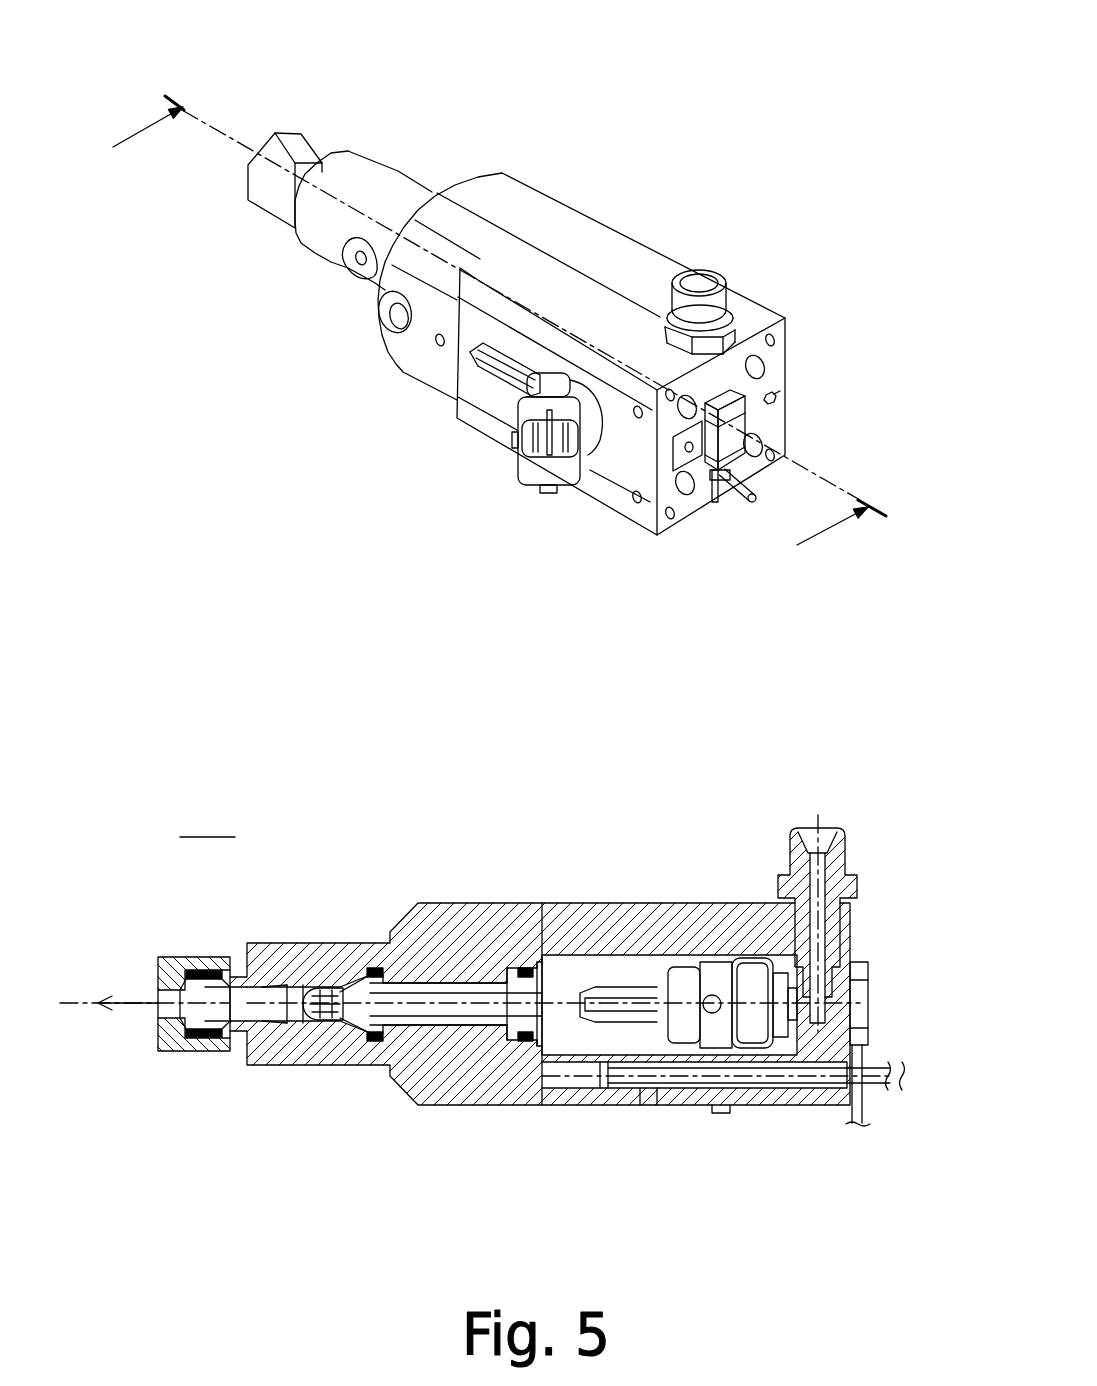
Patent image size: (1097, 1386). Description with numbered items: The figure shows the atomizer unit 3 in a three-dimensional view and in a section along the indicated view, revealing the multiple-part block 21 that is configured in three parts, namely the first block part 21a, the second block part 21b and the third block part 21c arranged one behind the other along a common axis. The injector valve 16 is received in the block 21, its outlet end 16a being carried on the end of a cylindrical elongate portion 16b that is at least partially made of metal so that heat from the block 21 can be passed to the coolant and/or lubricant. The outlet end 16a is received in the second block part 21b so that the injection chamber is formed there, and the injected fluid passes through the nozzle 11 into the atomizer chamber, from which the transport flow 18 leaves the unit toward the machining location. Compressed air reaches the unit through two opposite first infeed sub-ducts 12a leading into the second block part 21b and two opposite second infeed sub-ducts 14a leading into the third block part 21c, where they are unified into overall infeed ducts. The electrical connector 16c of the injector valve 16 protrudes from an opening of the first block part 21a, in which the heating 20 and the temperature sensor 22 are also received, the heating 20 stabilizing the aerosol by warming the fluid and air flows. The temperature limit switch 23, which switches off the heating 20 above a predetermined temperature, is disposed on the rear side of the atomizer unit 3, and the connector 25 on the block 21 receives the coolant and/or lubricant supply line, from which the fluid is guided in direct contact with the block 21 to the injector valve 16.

The atomizer unit 3 is at (512, 613).
The nozzle 11 is at (319, 907).
The first infeed sub-duct 12a is at (354, 388).
The second infeed sub-duct 14a is at (289, 344).
The injector valve 16 is at (643, 784).
The outlet end 16a is at (390, 1096).
The elongate portion 16b is at (456, 1087).
The electrical connector 16c is at (732, 1085).
The transport flow 18 is at (105, 968).
The heating 20 is at (861, 395).
The block 21 is at (526, 559).
The first block part 21a is at (653, 620).
The second block part 21b is at (519, 578).
The third block part 21c is at (540, 555).
The temperature sensor 22 is at (723, 847).
The temperature limit switch 23 is at (811, 717).
The connector 25 is at (818, 613).